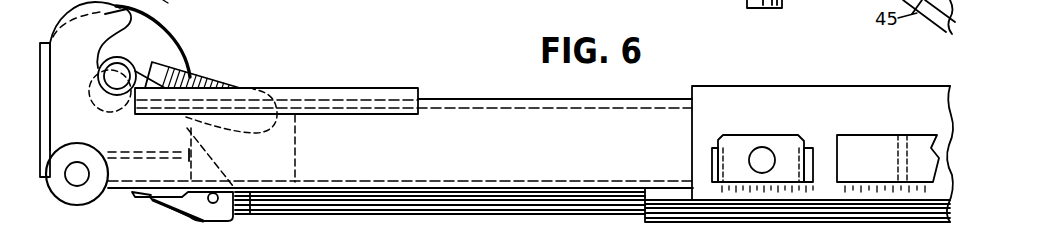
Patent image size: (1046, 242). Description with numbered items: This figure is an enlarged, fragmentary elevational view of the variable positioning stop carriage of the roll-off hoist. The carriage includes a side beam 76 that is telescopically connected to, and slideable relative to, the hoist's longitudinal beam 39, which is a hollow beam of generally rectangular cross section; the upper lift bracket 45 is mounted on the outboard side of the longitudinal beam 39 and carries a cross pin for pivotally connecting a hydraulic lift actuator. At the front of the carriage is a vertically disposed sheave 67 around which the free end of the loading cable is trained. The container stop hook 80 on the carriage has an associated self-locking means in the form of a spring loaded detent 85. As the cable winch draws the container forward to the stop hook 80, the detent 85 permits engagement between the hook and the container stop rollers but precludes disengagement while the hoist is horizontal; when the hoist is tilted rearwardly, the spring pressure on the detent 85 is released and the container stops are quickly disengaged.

The longitudinal beam 39 is at (760, 97).
The upper lift bracket 45 is at (862, 150).
The vertically disposed sheave 67 is at (163, 48).
The side beam 76 is at (463, 123).
The container stop hook 80 is at (163, 0).
The spring loaded detent 85 is at (205, 82).